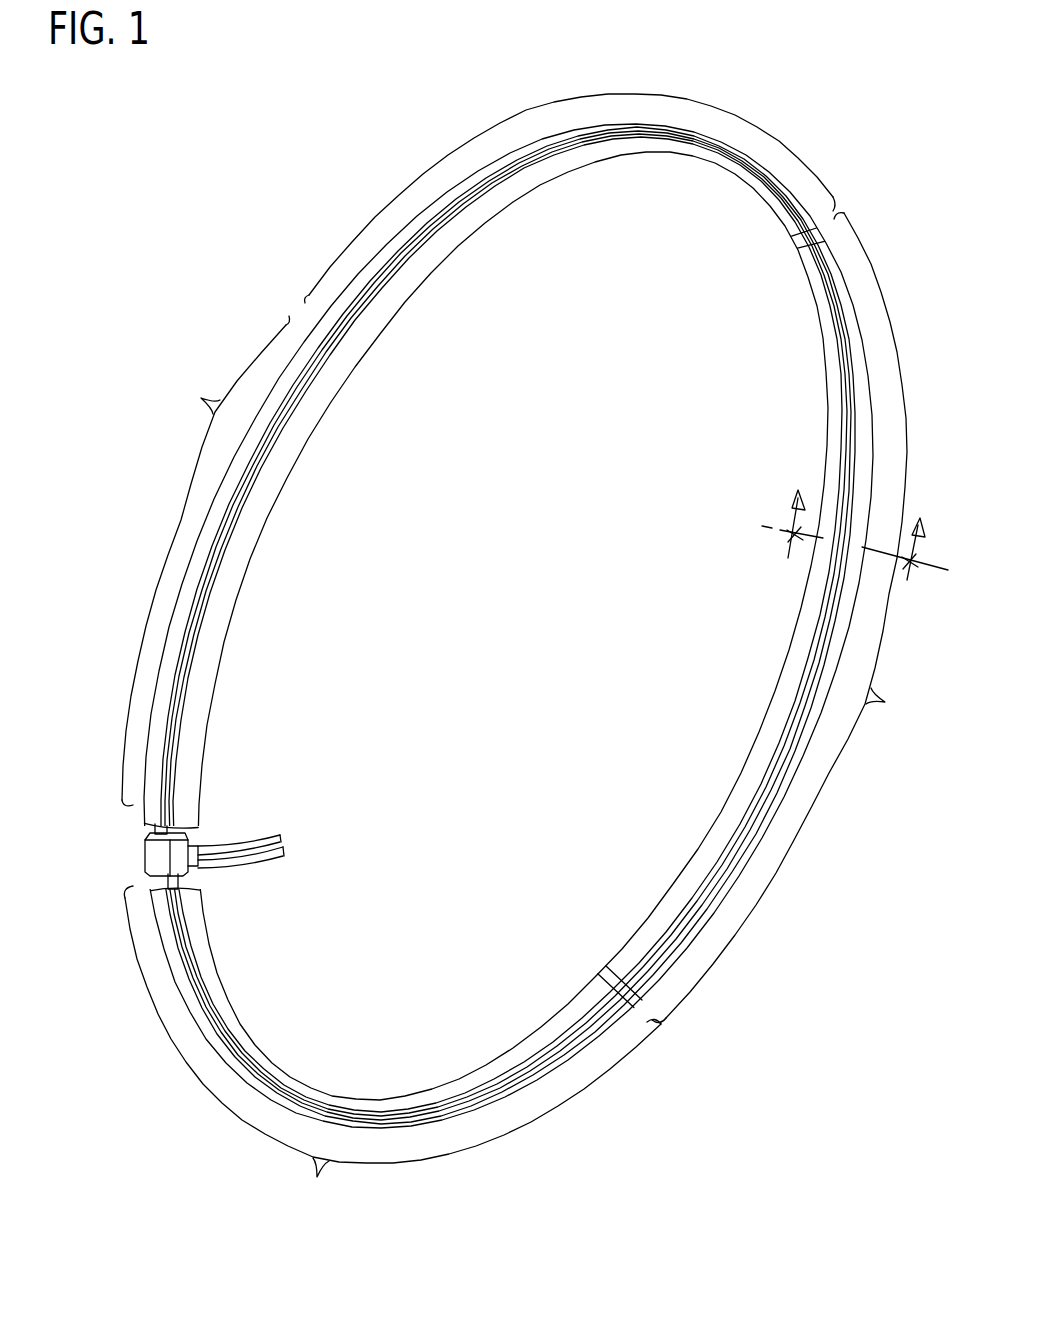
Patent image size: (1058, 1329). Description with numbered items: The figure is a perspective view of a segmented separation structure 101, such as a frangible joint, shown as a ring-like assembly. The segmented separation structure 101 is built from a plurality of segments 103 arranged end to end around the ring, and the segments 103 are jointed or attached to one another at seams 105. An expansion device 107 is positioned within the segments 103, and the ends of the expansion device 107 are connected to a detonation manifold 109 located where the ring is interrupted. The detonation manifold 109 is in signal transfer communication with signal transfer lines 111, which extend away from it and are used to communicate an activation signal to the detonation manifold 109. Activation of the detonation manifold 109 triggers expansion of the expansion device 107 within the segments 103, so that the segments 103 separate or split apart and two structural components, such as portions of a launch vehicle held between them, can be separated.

The segmented separation structure 101 is at (297, 318).
The segments 103 is at (201, 398).
The seams 105 is at (810, 237).
The expansion device 107 is at (190, 822).
The detonation manifold 109 is at (142, 862).
The signal transfer lines 111 is at (260, 837).